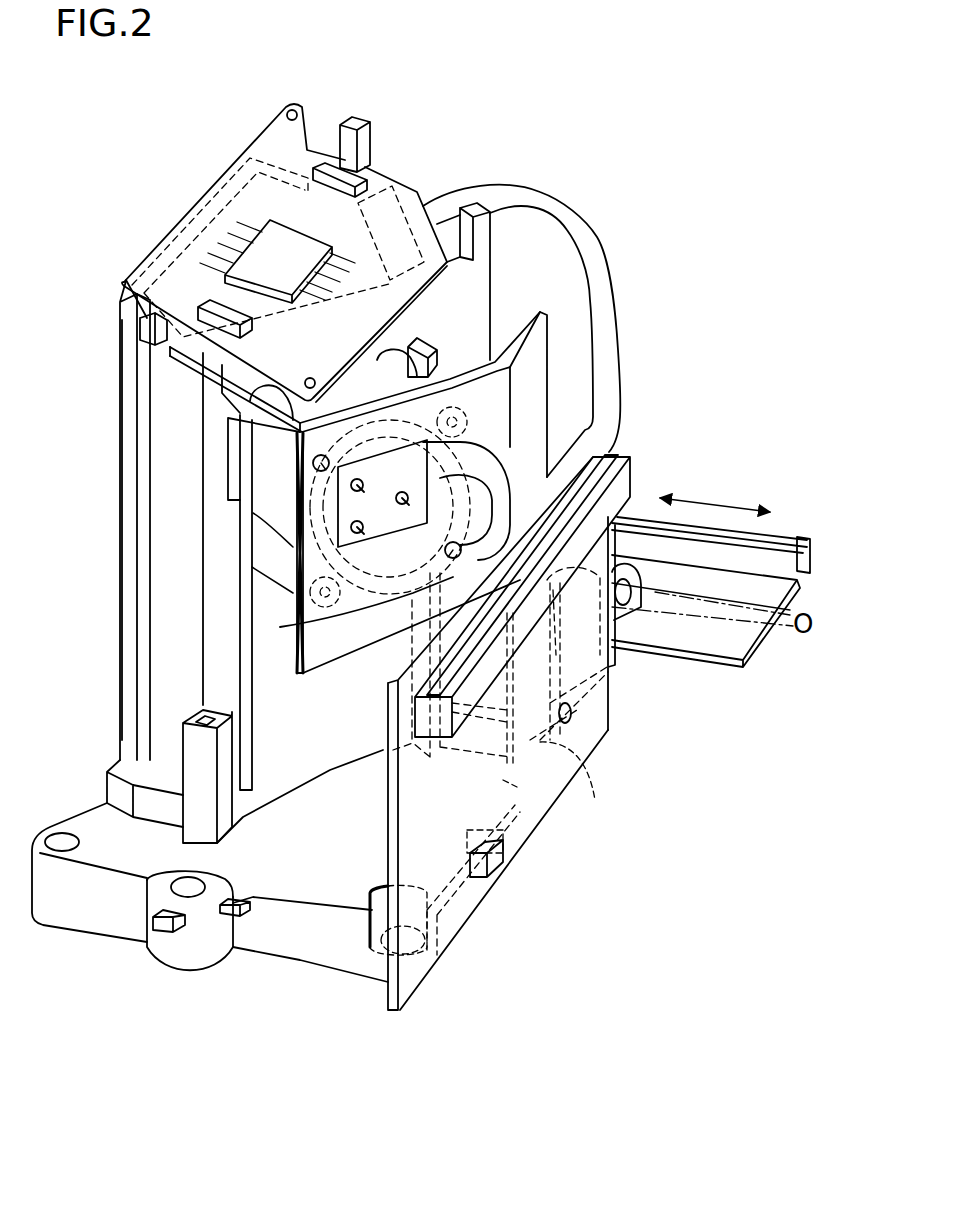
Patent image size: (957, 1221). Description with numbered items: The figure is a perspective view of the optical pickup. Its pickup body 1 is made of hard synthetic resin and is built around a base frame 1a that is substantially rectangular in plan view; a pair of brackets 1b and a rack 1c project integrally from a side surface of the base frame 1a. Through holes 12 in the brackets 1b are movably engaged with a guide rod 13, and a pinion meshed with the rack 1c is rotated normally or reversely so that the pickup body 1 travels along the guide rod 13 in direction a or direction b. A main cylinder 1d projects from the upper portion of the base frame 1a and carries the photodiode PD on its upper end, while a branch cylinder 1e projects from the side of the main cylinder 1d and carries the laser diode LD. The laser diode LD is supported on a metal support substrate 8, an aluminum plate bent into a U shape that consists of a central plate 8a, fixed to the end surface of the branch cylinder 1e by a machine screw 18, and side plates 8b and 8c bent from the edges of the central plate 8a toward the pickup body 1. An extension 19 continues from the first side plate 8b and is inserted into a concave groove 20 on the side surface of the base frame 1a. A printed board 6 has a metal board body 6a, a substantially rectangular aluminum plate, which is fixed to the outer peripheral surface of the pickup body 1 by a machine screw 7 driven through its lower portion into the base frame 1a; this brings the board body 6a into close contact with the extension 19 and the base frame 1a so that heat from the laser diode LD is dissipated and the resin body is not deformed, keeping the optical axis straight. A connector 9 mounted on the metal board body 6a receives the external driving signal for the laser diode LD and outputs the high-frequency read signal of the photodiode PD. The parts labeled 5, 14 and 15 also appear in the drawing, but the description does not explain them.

The pickup body 1 is at (112, 335).
The base frame 1a is at (100, 917).
The brackets 1b is at (618, 623).
The rack 1c is at (797, 537).
The main cylinder 1d is at (175, 385).
The branch cylinder 1e is at (275, 515).
The arch-shaped holder 5 is at (578, 232).
The printed board 6 is at (435, 992).
The metal board body 6a is at (387, 837).
The machine screw 7 is at (572, 716).
The metal support substrate 8 is at (500, 335).
The central plate 8a is at (325, 637).
The first side plate 8b is at (528, 368).
The side plate 8c is at (262, 487).
The connector 9 is at (617, 455).
The through holes 12 is at (638, 605).
The guide rod 13 is at (790, 628).
The hidden opening 14 is at (505, 828).
The projection 15 is at (477, 880).
The machine screw 18 is at (310, 465).
The extension 19 is at (583, 770).
The concave groove 20 is at (505, 787).
The photodiode PD is at (272, 236).
The laser diode LD is at (360, 508).
The direction a is at (715, 489).
The direction b is at (766, 488).